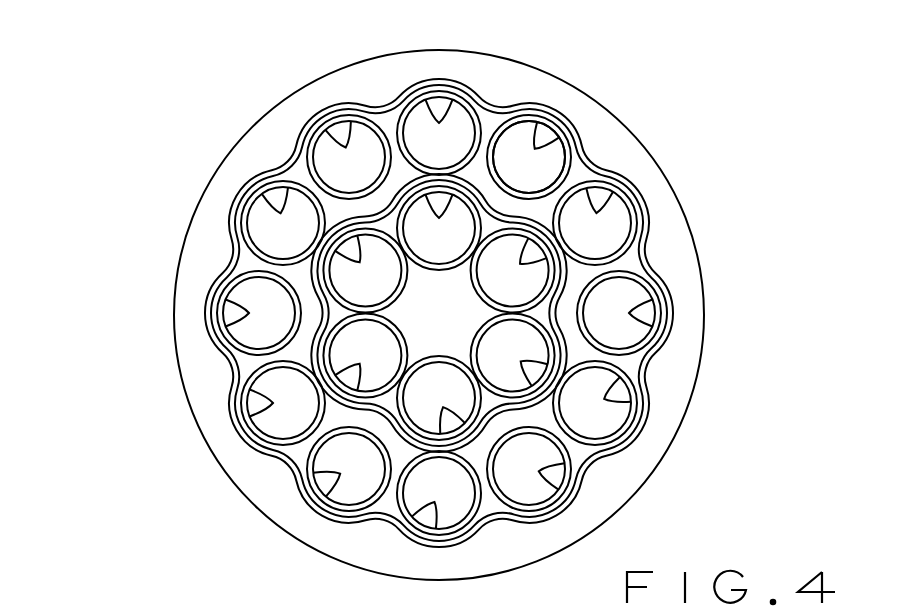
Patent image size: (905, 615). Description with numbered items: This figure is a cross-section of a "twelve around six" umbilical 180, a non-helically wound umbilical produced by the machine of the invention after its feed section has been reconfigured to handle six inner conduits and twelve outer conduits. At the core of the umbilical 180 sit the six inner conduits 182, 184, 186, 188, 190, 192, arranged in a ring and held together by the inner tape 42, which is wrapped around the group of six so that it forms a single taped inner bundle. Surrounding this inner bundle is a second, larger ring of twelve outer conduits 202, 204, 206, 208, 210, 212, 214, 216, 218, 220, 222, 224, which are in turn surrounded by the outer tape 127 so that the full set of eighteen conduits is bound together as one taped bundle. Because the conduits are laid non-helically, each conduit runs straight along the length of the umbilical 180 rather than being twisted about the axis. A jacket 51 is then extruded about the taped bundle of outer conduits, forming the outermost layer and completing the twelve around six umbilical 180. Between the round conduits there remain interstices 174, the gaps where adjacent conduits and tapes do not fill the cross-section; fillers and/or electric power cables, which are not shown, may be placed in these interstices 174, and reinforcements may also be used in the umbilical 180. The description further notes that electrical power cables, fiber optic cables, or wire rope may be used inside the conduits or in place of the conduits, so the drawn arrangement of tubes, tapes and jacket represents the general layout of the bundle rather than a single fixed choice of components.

The umbilical 180 is at (128, 137).
The jacket 51 is at (278, 105).
The outer tape 127 is at (387, 100).
The inner conduit 182 is at (498, 210).
The inner tape 42 is at (522, 160).
The interstices 174 is at (295, 172).
The inner conduit 184 is at (520, 263).
The inner conduit 186 is at (527, 372).
The inner conduit 188 is at (456, 416).
The inner conduit 190 is at (363, 378).
The inner conduit 192 is at (340, 262).
The outer conduit 202 is at (440, 120).
The outer conduit 204 is at (550, 143).
The outer conduit 206 is at (607, 210).
The outer conduit 208 is at (630, 320).
The outer conduit 210 is at (618, 395).
The outer conduit 212 is at (548, 480).
The outer conduit 214 is at (437, 512).
The outer conduit 216 is at (337, 480).
The outer conduit 218 is at (267, 408).
The outer conduit 220 is at (250, 313).
The outer conduit 222 is at (277, 212).
The outer conduit 224 is at (333, 133).